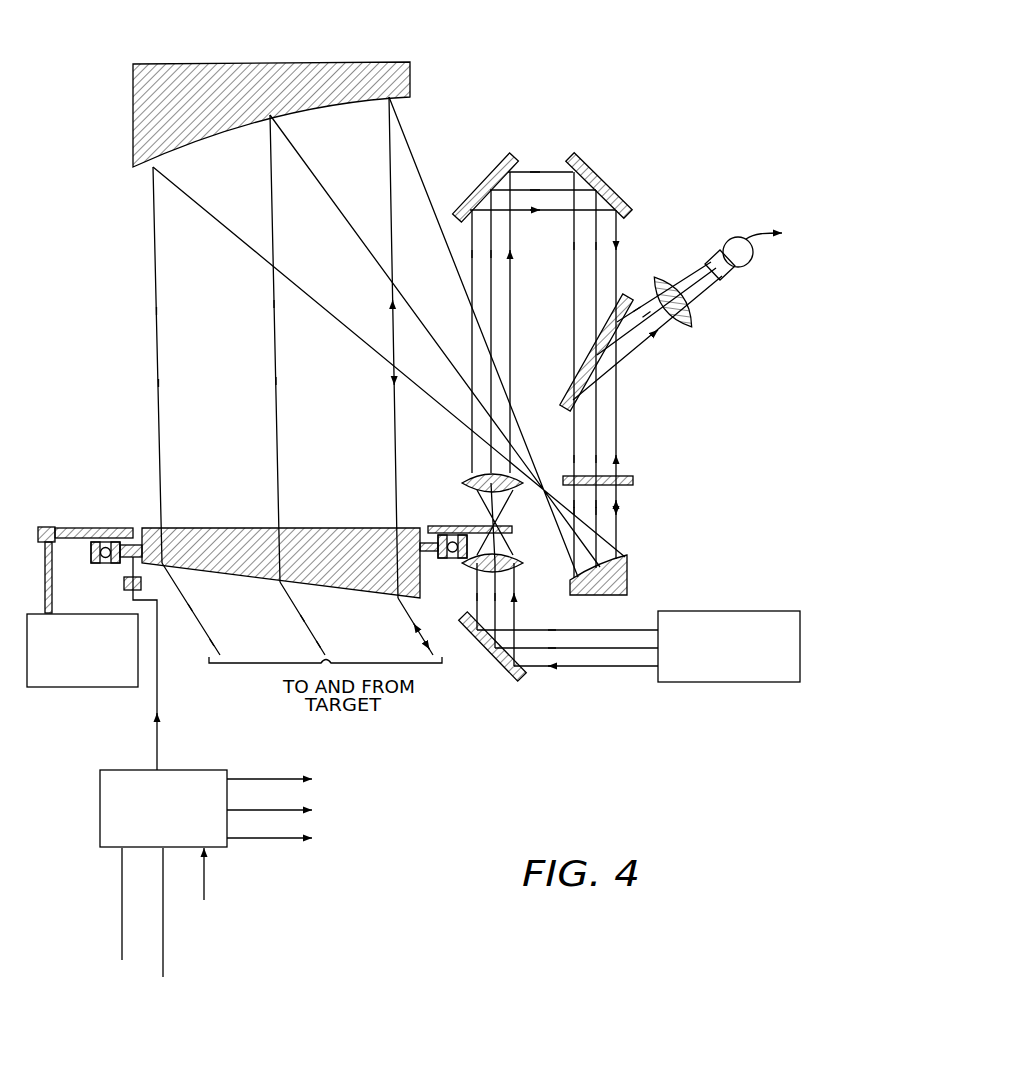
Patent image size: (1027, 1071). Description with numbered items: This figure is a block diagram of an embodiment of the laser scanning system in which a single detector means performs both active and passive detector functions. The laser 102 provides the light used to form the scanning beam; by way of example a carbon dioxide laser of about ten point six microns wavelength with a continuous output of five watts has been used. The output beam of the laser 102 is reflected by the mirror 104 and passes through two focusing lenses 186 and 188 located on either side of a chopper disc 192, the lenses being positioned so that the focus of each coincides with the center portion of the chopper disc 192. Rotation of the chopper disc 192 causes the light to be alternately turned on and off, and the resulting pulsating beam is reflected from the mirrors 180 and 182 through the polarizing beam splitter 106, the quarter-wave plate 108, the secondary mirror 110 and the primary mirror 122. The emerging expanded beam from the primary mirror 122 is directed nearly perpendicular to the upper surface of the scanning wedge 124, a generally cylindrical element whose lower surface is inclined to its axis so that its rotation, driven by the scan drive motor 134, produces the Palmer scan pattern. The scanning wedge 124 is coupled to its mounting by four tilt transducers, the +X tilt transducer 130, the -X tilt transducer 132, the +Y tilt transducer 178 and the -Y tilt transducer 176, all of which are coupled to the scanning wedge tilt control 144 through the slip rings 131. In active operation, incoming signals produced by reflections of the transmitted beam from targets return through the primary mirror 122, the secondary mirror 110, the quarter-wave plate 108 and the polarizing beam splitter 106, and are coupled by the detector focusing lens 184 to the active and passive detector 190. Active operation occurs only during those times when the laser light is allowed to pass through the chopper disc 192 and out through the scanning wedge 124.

The primary mirror 122 is at (195, 63).
The mirror 180 is at (493, 176).
The mirror 182 is at (604, 183).
The active and passive detector 190 is at (740, 267).
The detector focusing lens 184 is at (690, 328).
The polarizing beam splitter 106 is at (587, 380).
The quarter-wave plate 108 is at (634, 482).
The secondary mirror 110 is at (628, 558).
The laser 102 is at (697, 613).
The mirror 104 is at (526, 678).
The focusing lens 188 is at (516, 574).
The focusing lens 186 is at (463, 476).
The scanning wedge 124 is at (277, 528).
The +X tilt transducer 130 is at (137, 545).
The -X tilt transducer 132 is at (436, 514).
The chopper disc 192 is at (73, 527).
The slip rings 131 is at (122, 586).
The scan drive motor 134 is at (62, 688).
The scanning wedge tilt control 144 is at (227, 790).
The -Y tilt transducer 176 is at (413, 808).
The +Y tilt transducer 178 is at (413, 835).